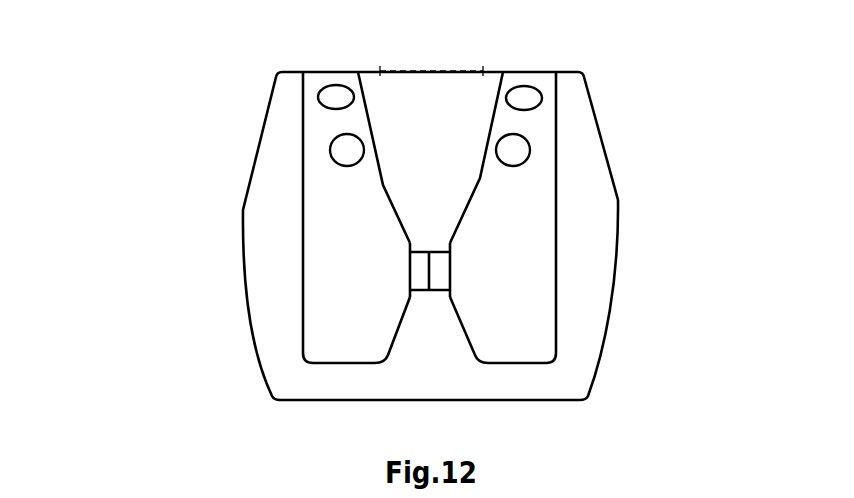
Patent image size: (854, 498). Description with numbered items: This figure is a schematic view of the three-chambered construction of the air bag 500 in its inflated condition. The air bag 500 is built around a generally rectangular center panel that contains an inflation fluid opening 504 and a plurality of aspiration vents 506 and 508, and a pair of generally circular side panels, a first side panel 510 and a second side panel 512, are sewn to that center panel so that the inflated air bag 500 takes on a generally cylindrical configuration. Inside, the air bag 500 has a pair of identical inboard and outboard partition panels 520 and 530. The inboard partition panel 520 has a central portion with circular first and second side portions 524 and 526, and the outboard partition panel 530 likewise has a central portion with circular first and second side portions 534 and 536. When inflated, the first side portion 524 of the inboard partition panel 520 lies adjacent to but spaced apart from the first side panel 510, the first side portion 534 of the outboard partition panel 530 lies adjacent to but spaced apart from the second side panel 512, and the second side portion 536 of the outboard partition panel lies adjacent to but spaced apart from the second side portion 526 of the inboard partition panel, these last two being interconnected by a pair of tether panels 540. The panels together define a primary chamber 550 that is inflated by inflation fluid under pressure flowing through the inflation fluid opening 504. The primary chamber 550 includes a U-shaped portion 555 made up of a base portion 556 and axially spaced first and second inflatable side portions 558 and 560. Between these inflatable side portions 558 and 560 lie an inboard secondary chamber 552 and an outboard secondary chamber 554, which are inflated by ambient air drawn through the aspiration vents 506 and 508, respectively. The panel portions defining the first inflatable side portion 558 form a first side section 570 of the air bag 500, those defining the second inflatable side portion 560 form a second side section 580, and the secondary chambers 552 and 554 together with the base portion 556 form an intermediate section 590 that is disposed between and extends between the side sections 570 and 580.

The air bag 500 is at (373, 269).
The inflation fluid opening 504 is at (422, 70).
The aspiration vent 506 is at (341, 100).
The aspiration vent 508 is at (521, 100).
The first side panel 510 is at (243, 197).
The second side panel 512 is at (617, 193).
The inboard partition panel 520 is at (298, 193).
The first side portion 524 is at (303, 247).
The second side portion 526 is at (383, 182).
The outboard partition panel 530 is at (555, 191).
The first side portion 534 is at (478, 192).
The second side portion 536 is at (557, 257).
The tether panel 540 is at (431, 254).
The primary chamber 550 is at (386, 390).
The inboard secondary chamber 552 is at (320, 273).
The outboard secondary chamber 554 is at (540, 300).
The U-shaped portion 555 is at (584, 333).
The base portion 556 is at (458, 382).
The first inflatable side portion 558 is at (280, 187).
The second inflatable side portion 560 is at (582, 167).
The first side section 570 is at (237, 393).
The second side section 580 is at (616, 381).
The intermediate section 590 is at (480, 429).